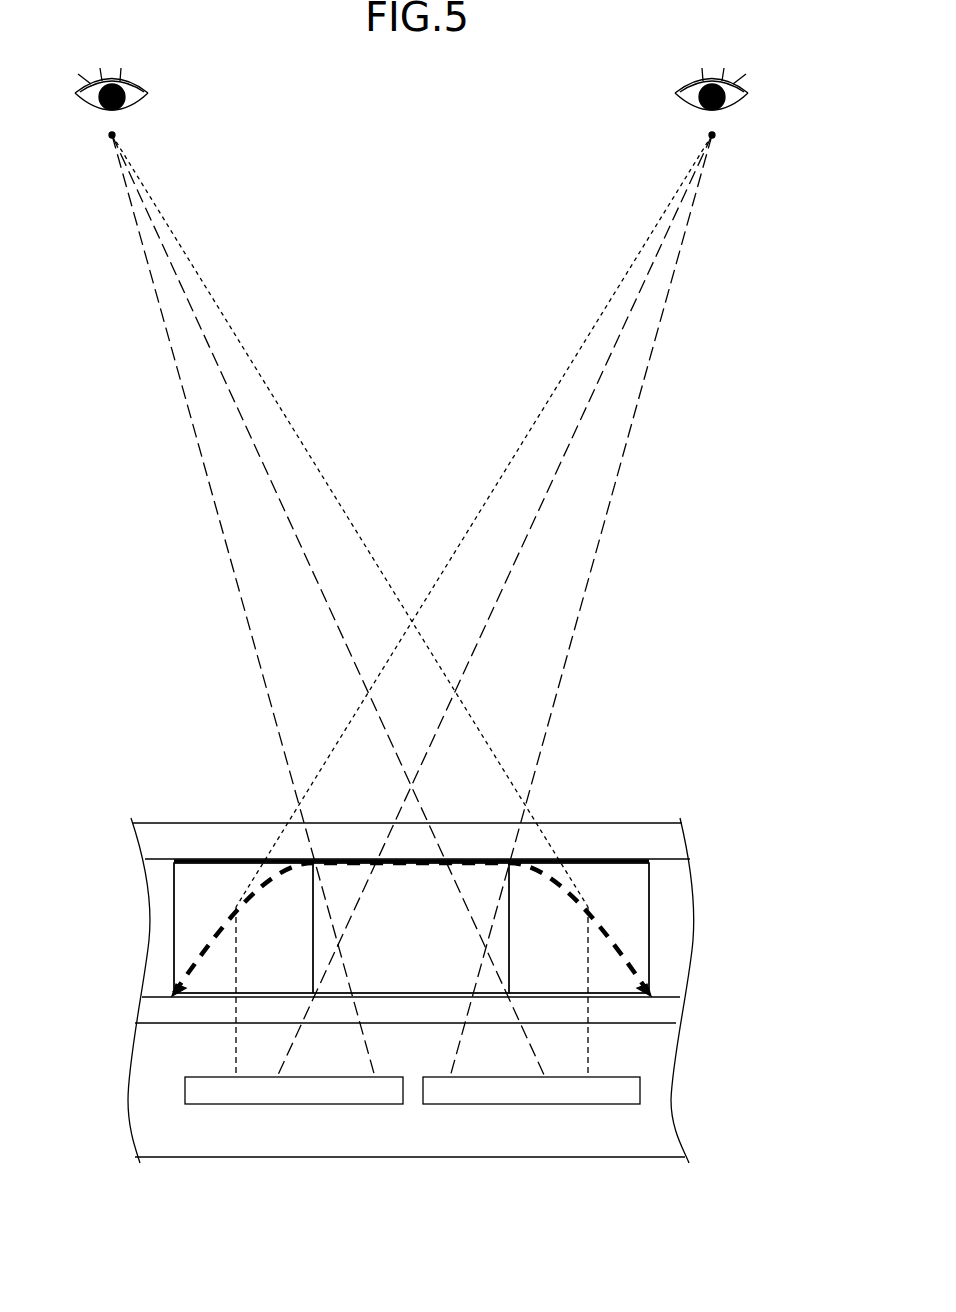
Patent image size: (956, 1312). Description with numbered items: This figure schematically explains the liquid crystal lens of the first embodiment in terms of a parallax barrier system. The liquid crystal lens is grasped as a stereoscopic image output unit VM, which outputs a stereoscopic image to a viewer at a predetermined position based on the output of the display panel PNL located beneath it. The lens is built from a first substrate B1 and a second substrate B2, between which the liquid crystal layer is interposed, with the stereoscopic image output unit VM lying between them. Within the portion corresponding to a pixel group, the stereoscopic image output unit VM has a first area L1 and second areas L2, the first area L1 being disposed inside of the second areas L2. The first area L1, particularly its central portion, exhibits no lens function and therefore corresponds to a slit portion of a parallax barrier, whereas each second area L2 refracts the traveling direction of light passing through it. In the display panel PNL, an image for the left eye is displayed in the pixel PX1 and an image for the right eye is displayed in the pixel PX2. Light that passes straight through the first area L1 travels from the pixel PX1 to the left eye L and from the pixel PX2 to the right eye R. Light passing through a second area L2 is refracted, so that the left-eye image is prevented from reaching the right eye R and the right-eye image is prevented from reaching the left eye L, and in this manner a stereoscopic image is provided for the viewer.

The right eye R is at (127, 103).
The left eye L is at (725, 103).
The second substrate B2 is at (662, 843).
The stereoscopic image output unit VM is at (700, 860).
The first area L1 is at (411, 928).
The second area L2 is at (411, 928).
The first substrate B1 is at (662, 1007).
The display panel PNL is at (662, 1088).
The pixel PX1 is at (293, 1094).
The pixel PX2 is at (533, 1094).